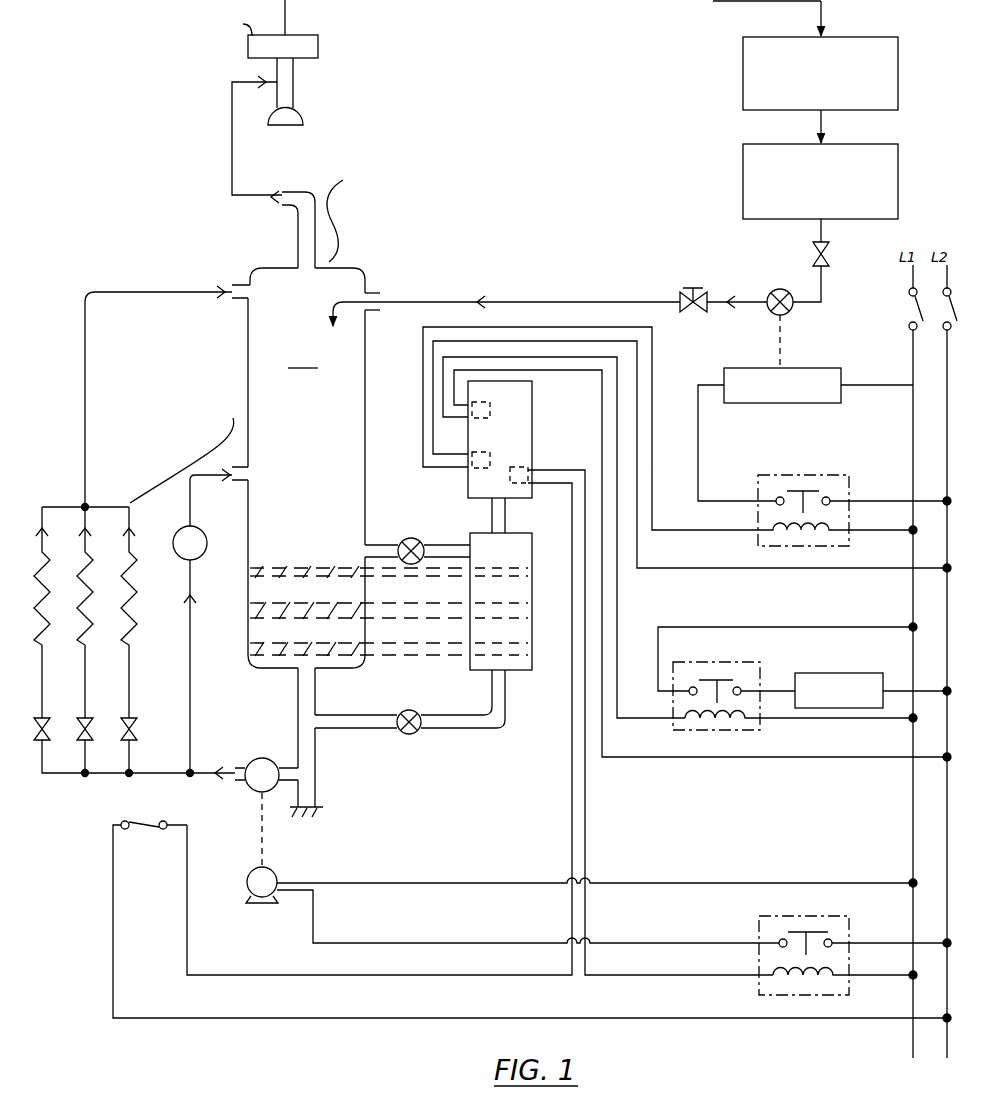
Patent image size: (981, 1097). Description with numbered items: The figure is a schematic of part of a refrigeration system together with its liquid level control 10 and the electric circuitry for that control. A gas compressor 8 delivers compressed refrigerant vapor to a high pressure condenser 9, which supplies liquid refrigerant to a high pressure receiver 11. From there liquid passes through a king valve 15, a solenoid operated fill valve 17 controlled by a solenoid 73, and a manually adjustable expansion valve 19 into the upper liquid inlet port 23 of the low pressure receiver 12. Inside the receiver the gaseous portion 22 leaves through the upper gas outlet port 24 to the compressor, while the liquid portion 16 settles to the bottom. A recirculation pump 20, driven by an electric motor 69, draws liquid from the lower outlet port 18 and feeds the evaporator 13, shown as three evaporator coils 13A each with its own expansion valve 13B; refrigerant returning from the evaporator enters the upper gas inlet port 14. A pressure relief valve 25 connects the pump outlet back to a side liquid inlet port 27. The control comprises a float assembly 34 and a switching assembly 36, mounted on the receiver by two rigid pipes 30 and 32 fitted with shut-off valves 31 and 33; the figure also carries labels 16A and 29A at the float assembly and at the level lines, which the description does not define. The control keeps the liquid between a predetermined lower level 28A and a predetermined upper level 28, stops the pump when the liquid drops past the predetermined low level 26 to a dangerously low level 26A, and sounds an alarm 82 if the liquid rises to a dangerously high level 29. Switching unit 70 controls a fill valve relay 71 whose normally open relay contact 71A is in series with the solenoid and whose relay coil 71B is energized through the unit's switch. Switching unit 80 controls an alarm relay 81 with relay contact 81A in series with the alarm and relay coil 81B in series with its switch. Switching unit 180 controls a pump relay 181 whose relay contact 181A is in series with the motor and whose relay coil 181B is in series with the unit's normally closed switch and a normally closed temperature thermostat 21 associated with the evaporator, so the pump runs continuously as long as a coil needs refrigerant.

The gas compressor 8 is at (307, 91).
The high pressure condenser 9 is at (742, 70).
The liquid level control 10 is at (516, 522).
The high pressure receiver 11 is at (742, 165).
The low pressure receiver 12 is at (370, 264).
The evaporator 13 is at (127, 589).
The evaporator coil 13A is at (36, 556).
The expansion valve 13B is at (50, 726).
The upper gas inlet port 14 is at (238, 283).
The king valve 15 is at (831, 254).
The liquid portion 16 is at (272, 668).
The float chamber outlet 16A is at (518, 672).
The solenoid operated fill valve 17 is at (792, 311).
The lower outlet port 18 is at (291, 766).
The manually adjustable expansion valve 19 is at (703, 290).
The recirculation pump 20 is at (253, 759).
The temperature thermostat 21 is at (119, 820).
The gaseous portion 22 is at (303, 358).
The upper liquid inlet port 23 is at (377, 292).
The upper gas outlet port 24 is at (284, 190).
The pressure relief valve 25 is at (231, 506).
The predetermined low level 26 is at (270, 644).
The dangerously low level 26A is at (256, 657).
The liquid inlet port 27 is at (238, 466).
The predetermined upper level 28 is at (272, 604).
The predetermined lower level 28A is at (256, 617).
The dangerously high level 29 is at (285, 567).
The high liquid level line 29A is at (256, 576).
The rigid pipe 30 is at (462, 729).
The shut-off valve 31 is at (405, 734).
The rigid pipe 32 is at (450, 541).
The shut-off valve 33 is at (413, 538).
The float assembly 34 is at (468, 666).
The switching assembly 36 is at (533, 395).
The electric motor 69 is at (279, 877).
The switching unit 70 is at (487, 470).
The fill valve relay 71 is at (823, 509).
The relay contact 71A is at (776, 505).
The relay coil 71B is at (770, 537).
The solenoid 73 is at (842, 370).
The switching unit 80 is at (485, 420).
The alarm relay 81 is at (769, 685).
The relay contact 81A is at (690, 696).
The relay coil 81B is at (746, 723).
The alarm 82 is at (884, 672).
The switching unit 180 is at (522, 468).
The pump relay 181 is at (817, 952).
The relay contact 181A is at (778, 947).
The relay coil 181B is at (771, 980).